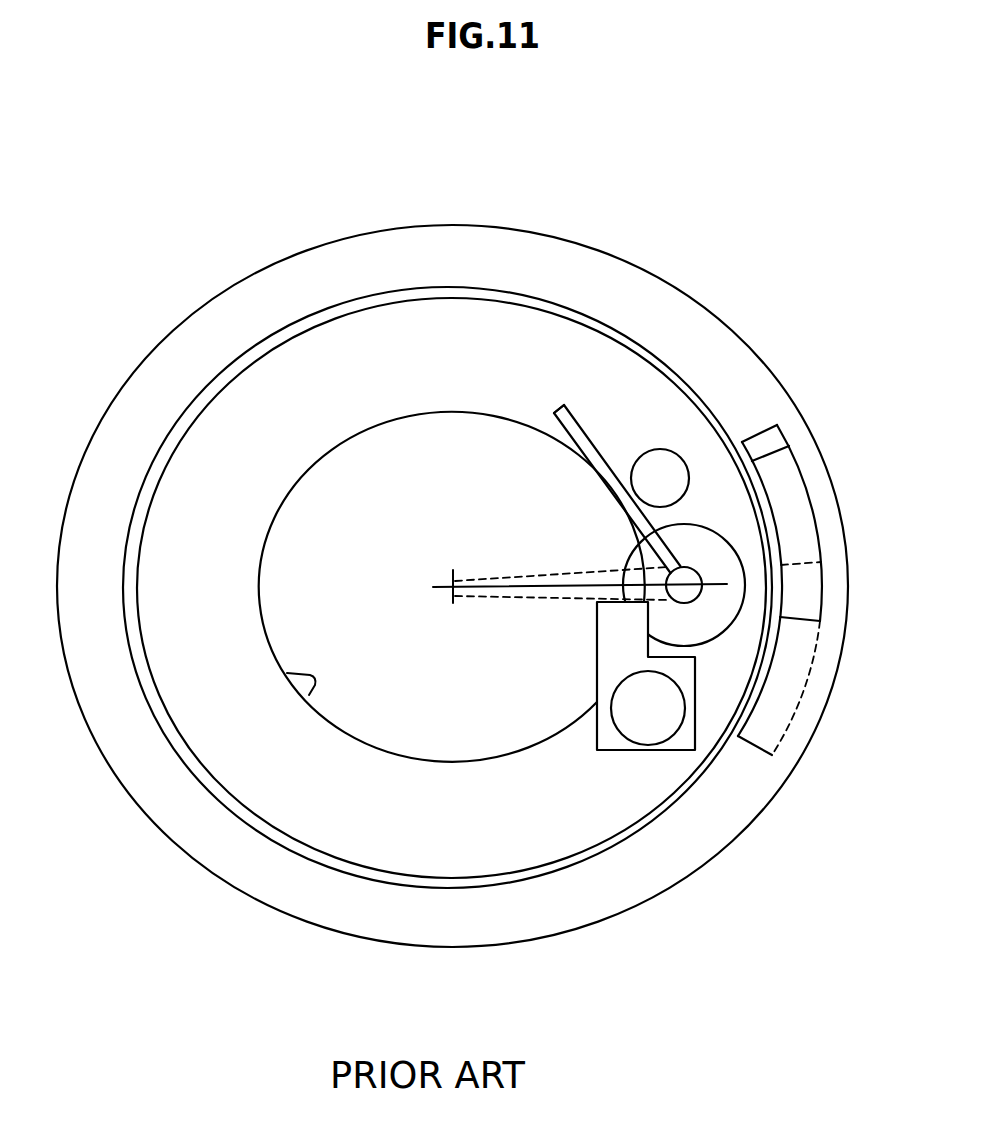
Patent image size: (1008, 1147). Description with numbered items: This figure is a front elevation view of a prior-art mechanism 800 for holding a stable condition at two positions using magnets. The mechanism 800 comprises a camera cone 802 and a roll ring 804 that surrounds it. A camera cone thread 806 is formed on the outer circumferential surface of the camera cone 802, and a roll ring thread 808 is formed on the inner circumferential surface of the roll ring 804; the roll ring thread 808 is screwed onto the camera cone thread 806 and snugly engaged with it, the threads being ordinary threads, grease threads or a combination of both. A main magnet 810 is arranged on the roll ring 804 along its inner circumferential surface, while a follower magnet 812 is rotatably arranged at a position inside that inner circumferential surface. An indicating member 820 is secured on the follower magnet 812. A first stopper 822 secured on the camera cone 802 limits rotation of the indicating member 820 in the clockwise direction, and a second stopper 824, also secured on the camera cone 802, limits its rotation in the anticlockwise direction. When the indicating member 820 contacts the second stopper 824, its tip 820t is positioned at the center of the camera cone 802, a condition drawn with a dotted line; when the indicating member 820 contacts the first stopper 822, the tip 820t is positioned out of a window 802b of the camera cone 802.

The mechanism for holding a stable condition at two positions 800 is at (303, 228).
The camera cone 802 is at (497, 847).
The window 802b is at (313, 687).
The roll ring 804 is at (660, 848).
The camera cone thread 806 is at (613, 333).
The roll ring thread 808 is at (653, 348).
The main magnet 810 is at (783, 473).
The follower magnet 812 is at (722, 597).
The indicating member 820 is at (591, 430).
The tip of the indicating member 820t is at (560, 410).
The first stopper 822 is at (667, 467).
The second stopper 824 is at (620, 637).